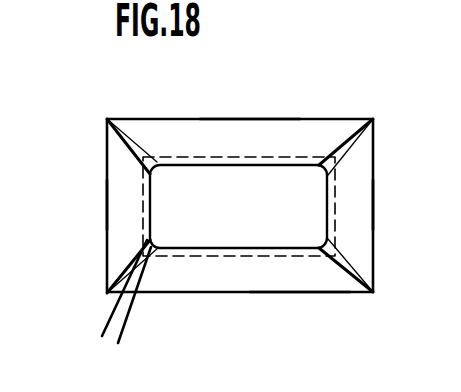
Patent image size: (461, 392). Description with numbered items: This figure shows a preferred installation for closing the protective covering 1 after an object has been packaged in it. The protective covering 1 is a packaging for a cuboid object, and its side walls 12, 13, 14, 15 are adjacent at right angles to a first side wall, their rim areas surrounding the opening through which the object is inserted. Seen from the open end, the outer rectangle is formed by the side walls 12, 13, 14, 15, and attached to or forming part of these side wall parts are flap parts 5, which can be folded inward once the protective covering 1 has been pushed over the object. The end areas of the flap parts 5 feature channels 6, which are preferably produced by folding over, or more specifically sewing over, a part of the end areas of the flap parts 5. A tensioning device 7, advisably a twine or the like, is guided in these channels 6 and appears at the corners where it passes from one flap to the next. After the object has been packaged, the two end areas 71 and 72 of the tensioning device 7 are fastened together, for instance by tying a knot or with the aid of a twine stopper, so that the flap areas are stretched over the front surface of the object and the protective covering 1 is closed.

The protective covering 1 is at (335, 100).
The flap parts 5 is at (298, 133).
The channels 6 is at (327, 212).
The tensioning device 7 is at (148, 165).
The side wall 12 is at (375, 199).
The side wall 13 is at (241, 118).
The side wall 14 is at (302, 294).
The side wall 15 is at (105, 202).
The end area of tensioning device 71 is at (116, 307).
The end area of tensioning device 72 is at (129, 308).